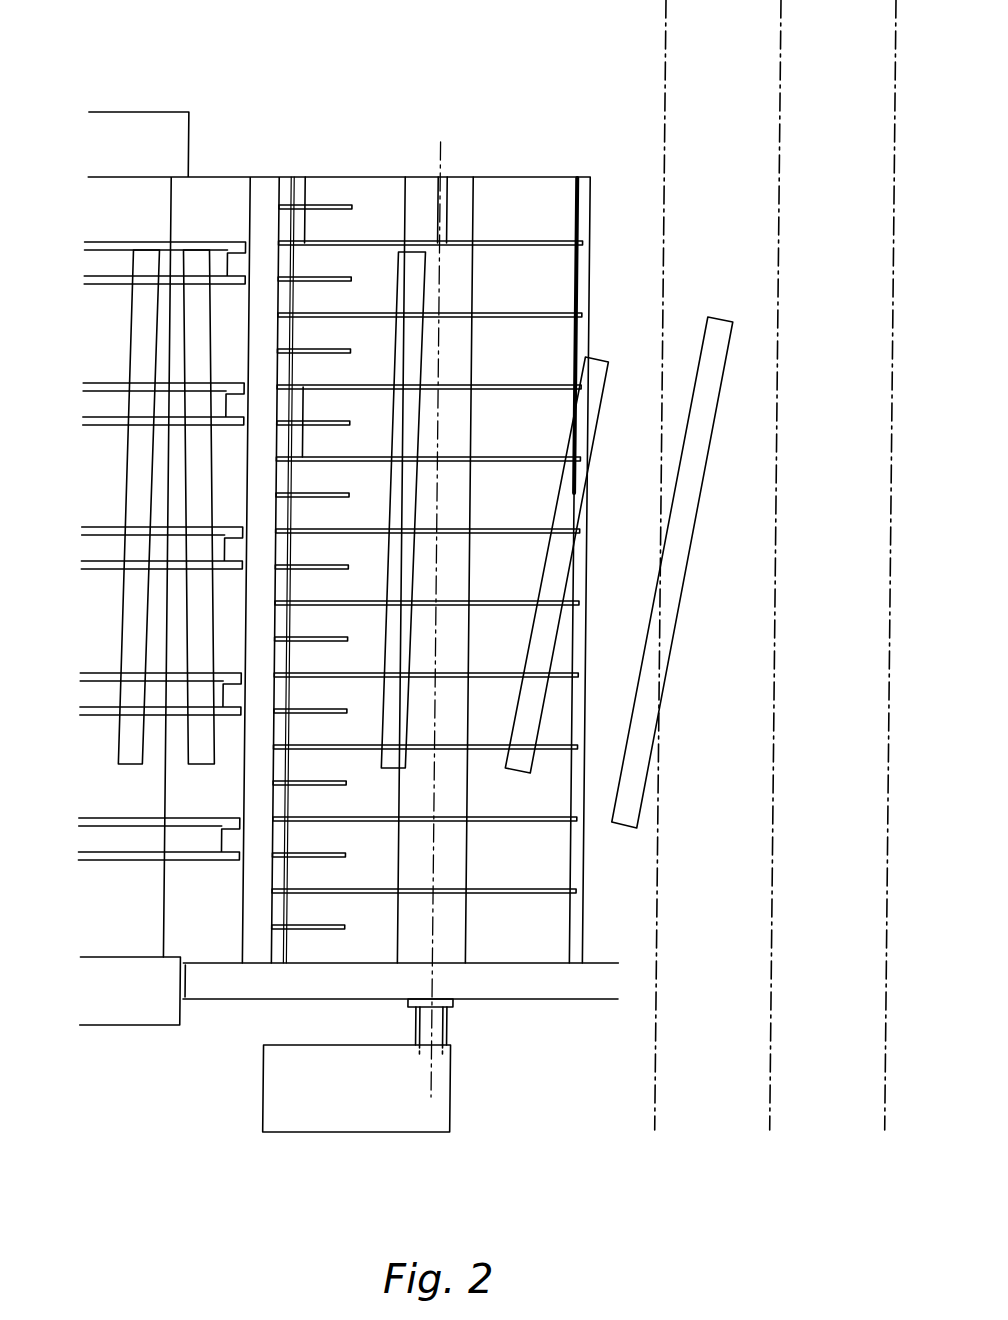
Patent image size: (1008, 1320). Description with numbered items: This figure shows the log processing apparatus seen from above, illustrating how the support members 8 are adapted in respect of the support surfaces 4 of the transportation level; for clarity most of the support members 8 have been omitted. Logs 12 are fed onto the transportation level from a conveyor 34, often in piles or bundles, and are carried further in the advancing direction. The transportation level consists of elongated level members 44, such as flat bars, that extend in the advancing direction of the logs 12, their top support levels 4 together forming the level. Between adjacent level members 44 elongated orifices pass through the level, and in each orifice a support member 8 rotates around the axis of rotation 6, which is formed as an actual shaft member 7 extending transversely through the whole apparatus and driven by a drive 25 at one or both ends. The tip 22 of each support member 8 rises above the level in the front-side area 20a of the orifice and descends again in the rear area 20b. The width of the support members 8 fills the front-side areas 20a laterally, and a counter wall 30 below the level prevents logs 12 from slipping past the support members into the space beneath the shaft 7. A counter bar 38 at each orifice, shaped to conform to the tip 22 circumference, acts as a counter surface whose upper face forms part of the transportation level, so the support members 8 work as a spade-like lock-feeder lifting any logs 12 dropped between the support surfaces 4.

The support surface 4 is at (345, 893).
The axis of rotation 6 is at (441, 922).
The shaft member 7 is at (475, 917).
The support member 8 is at (313, 197).
The log 12 is at (416, 512).
The front-side orifice area 20a is at (368, 777).
The rear-side orifice area 20b is at (534, 288).
The tip of the support member 22 is at (442, 225).
The drive 25 is at (309, 1090).
The counter wall 30 is at (293, 227).
The conveyor 34 is at (144, 1057).
The counter bar 38 is at (338, 340).
The level member 44 is at (316, 905).